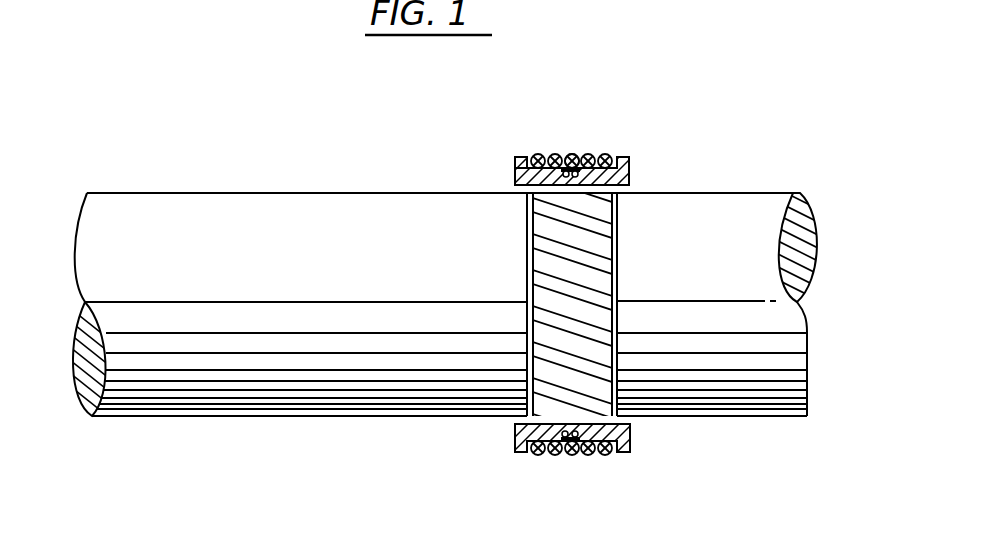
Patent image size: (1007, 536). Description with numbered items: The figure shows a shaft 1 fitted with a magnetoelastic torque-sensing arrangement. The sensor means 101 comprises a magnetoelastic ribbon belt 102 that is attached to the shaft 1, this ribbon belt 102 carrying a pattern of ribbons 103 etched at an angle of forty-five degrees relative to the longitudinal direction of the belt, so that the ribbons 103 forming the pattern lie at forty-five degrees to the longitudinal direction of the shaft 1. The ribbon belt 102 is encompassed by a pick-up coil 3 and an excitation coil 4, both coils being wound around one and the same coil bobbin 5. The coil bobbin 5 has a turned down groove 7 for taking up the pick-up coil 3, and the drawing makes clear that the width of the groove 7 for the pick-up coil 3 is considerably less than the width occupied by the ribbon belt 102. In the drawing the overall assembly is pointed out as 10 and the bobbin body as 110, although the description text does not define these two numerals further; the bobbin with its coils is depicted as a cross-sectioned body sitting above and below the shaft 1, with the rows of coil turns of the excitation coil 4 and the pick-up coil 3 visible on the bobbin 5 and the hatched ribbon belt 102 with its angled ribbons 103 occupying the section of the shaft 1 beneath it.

The shaft 1 is at (770, 192).
The sensor assembly 10 is at (495, 125).
The housing 110 is at (513, 185).
The coil bobbin 5 is at (520, 160).
The excitation coil 4 is at (538, 154).
The pick-up coil 3 is at (573, 154).
The magnetoelastic ribbon belt 102 is at (617, 237).
The ribbons 103 is at (617, 343).
The sensor means 101 is at (624, 367).
The turned down groove 7 is at (575, 455).